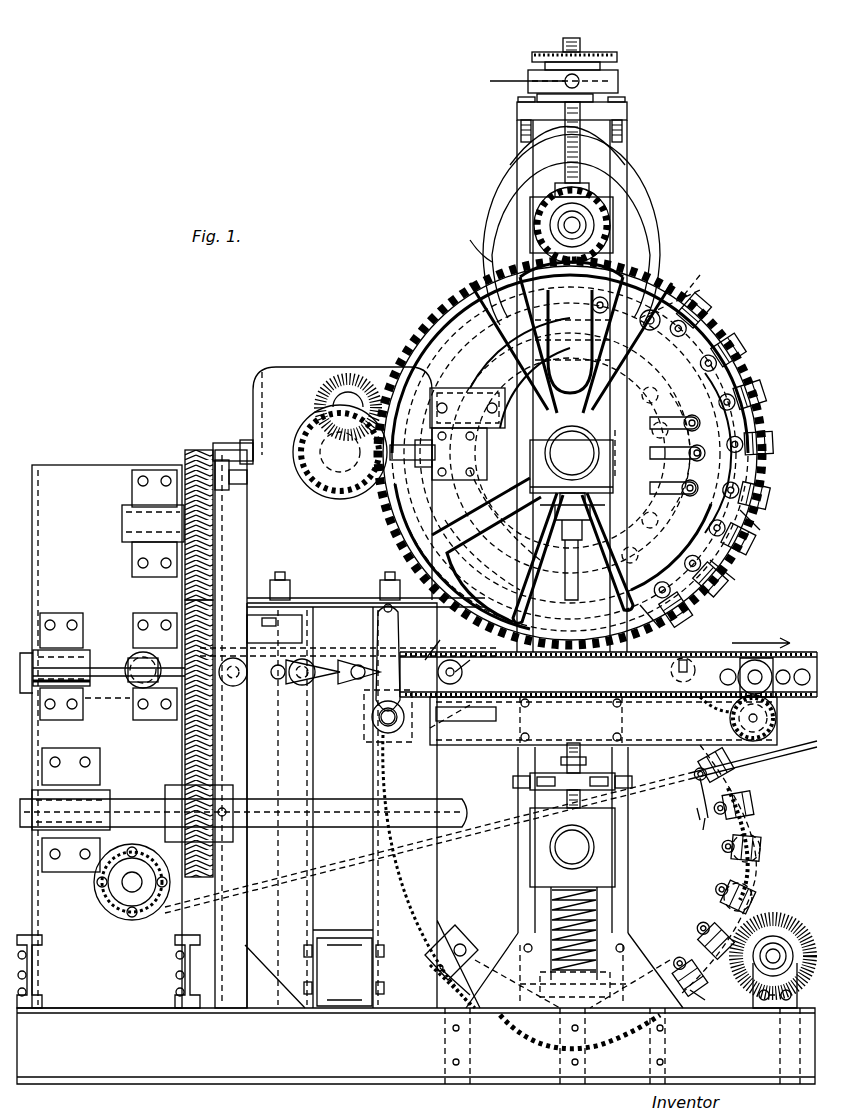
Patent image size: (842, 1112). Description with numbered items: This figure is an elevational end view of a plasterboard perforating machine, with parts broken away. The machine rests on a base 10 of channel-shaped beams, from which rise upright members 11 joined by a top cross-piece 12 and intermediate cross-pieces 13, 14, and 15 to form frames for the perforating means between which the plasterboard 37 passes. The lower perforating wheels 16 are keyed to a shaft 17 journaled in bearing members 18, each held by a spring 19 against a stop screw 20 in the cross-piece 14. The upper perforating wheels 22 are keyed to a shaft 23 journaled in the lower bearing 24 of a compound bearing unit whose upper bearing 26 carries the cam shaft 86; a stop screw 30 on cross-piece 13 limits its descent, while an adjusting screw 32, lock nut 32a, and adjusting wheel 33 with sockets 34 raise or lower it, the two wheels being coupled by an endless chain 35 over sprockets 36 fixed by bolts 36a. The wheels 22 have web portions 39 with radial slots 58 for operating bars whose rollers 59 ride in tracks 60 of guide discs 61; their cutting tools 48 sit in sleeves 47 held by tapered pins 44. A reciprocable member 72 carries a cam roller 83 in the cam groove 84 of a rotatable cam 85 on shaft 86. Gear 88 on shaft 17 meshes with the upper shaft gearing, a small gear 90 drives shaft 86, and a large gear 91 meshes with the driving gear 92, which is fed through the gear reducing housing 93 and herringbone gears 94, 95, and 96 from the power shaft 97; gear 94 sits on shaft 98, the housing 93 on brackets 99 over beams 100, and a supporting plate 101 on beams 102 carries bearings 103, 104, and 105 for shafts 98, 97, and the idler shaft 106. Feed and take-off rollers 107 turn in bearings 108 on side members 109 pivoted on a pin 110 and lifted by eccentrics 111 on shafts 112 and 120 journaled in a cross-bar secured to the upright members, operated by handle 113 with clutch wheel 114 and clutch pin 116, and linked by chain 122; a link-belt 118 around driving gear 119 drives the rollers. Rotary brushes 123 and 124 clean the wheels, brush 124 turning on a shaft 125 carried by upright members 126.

The base 10 is at (352, 1068).
The upright members 11 is at (612, 145).
The top cross-piece 12 is at (600, 106).
The intermediate cross-piece 13 is at (631, 455).
The intermediate cross-piece 14 is at (615, 768).
The intermediate cross-piece 15 is at (680, 938).
The lower perforating wheels 16 is at (760, 820).
The lower rotatable shaft 17 is at (580, 855).
The bearing members 18 is at (598, 818).
The spring 19 is at (598, 925).
The stop screw 20 is at (584, 772).
The upper perforating wheels 22 is at (700, 277).
The upper rotatable shaft 23 is at (573, 524).
The lower bearing member 24 is at (690, 360).
The upper bearing member 26 is at (545, 235).
The stop screw 30 is at (486, 546).
The adjusting screw 32 is at (580, 150).
The lock nut 32a is at (525, 125).
The adjusting wheel 33 is at (605, 78).
The sockets 34 is at (529, 80).
The endless chain 35 is at (604, 54).
The sprockets 36 is at (532, 53).
The bolts 36a is at (562, 45).
The plasterboard sheet 37 is at (708, 652).
The web portions 39 is at (700, 447).
The tapered pin 44 is at (752, 895).
The threaded sleeve 47 is at (731, 577).
The tubular cutting tool 48 is at (760, 527).
The radially extending slots 58 is at (680, 470).
The rollers 59 is at (742, 400).
The circular grooves or tracks 60 is at (688, 303).
The guide discs 61 is at (690, 420).
The reciprocable member 72 is at (666, 621).
The cam roller 83 is at (466, 239).
The cam groove 84 is at (606, 232).
The rotatable cam 85 is at (640, 178).
The cam shaft 86 is at (576, 230).
The gear 88 is at (760, 850).
The small gear 90 is at (590, 222).
The large gear 91 is at (455, 300).
The driving gear 92 is at (320, 430).
The gear reducing housing 93 is at (280, 440).
The herringbone gear 94 is at (215, 458).
The herringbone idler gear 95 is at (218, 600).
The herringbone gear 96 is at (214, 760).
The power shaft 97 is at (255, 822).
The shaft 98 is at (238, 472).
The supporting brackets 99 is at (345, 746).
The channel-shaped beams 100 is at (344, 972).
The channel-shaped supporting plate 101 is at (62, 470).
The beams 102 is at (190, 958).
The bearing 103 is at (143, 470).
The bearing 104 is at (92, 780).
The bearings 105 is at (132, 640).
The shaft 106 is at (100, 660).
The feed rollers 107 is at (325, 650).
The bearings 108 is at (320, 684).
The movable side members 109 is at (800, 705).
The pin 110 is at (108, 720).
The eccentrics 111 is at (378, 720).
The shaft 112 is at (470, 772).
The operating handle 113 is at (398, 648).
The clutch wheel 114 is at (446, 641).
The clutch pin 116 is at (335, 600).
The endless chain or link-belt 118 is at (345, 842).
The driving gear 119 is at (118, 918).
The shaft 120 is at (733, 719).
The endless belt or chain 122 is at (572, 702).
The rotary brush 123 is at (348, 372).
The rotary brush 124 is at (790, 905).
The shaft 125 is at (713, 996).
The upright supporting members 126 is at (778, 1008).